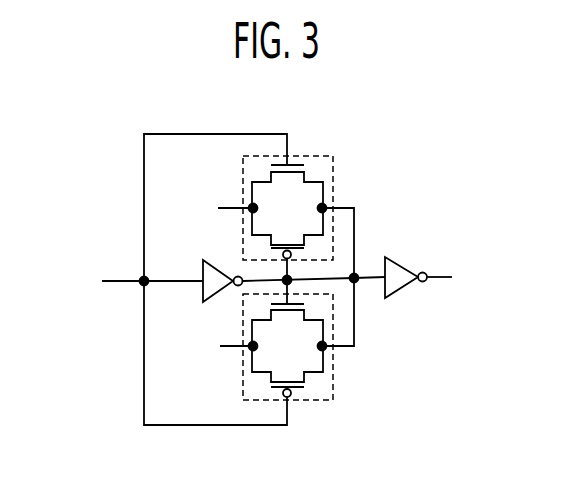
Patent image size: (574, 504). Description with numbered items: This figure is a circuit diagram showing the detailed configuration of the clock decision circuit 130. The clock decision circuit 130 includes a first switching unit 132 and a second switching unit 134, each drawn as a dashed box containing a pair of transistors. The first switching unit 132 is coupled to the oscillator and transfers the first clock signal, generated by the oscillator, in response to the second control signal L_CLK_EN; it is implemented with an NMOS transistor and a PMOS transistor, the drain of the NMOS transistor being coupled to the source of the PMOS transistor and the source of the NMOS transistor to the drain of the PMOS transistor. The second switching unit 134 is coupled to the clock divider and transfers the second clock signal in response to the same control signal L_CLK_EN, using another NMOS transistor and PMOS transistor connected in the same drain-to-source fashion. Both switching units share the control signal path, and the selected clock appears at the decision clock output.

The clock decision circuit 130 is at (384, 492).
The first switching unit 132 is at (333, 172).
The second switching unit 134 is at (333, 389).